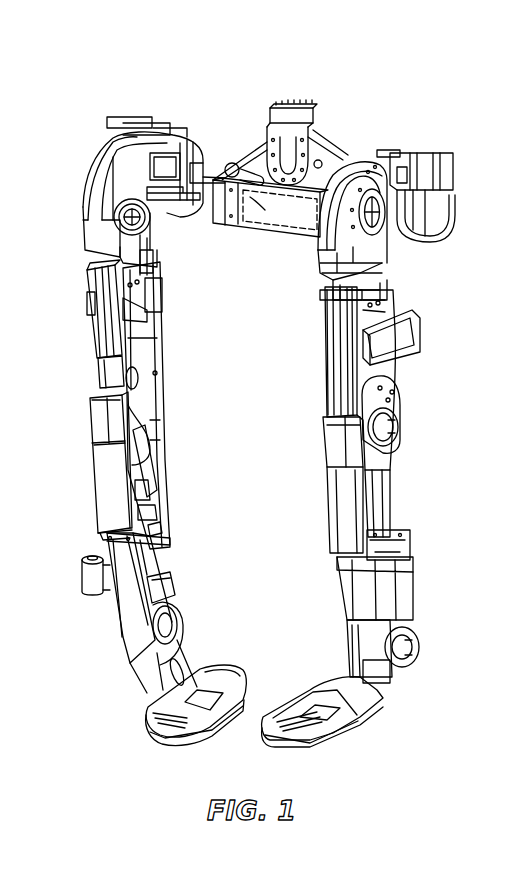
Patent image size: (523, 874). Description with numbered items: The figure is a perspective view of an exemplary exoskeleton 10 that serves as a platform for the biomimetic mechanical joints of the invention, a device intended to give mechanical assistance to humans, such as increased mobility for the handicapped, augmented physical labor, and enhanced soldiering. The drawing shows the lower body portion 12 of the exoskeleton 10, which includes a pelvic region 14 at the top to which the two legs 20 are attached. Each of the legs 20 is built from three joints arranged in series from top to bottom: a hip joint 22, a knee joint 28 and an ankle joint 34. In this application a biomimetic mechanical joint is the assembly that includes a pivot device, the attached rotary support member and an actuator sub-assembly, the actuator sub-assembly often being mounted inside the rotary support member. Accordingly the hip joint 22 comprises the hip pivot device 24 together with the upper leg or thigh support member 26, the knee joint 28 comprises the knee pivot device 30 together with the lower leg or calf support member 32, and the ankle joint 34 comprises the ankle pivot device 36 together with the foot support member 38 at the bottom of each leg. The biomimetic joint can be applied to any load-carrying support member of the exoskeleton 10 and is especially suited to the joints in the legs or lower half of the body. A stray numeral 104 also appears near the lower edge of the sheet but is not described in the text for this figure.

The exoskeleton 10 is at (82, 100).
The lower body portion 12 is at (81, 619).
The pelvic region 14 is at (265, 205).
The legs 20 is at (93, 373).
The hip joint 22 is at (383, 225).
The hip pivot device 24 is at (377, 208).
The thigh support member 26 is at (315, 247).
The knee joint 28 is at (392, 433).
The knee pivot device 30 is at (395, 420).
The calf support member 32 is at (327, 467).
The ankle joint 34 is at (410, 647).
The ankle pivot device 36 is at (407, 633).
The foot support member 38 is at (350, 713).
The stray numeral 104 is at (522, 863).